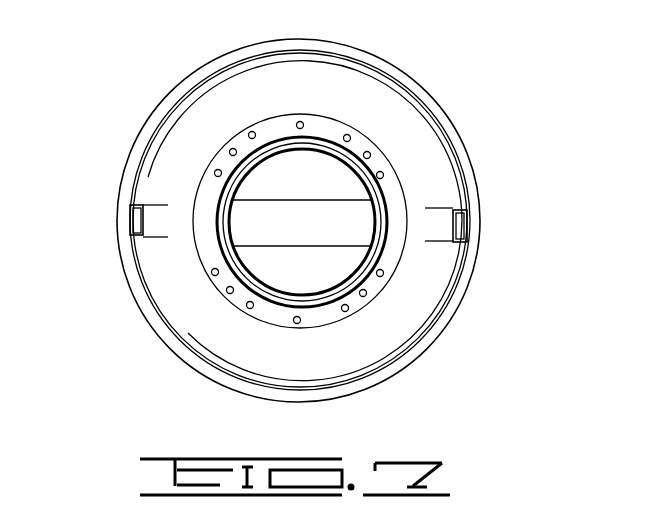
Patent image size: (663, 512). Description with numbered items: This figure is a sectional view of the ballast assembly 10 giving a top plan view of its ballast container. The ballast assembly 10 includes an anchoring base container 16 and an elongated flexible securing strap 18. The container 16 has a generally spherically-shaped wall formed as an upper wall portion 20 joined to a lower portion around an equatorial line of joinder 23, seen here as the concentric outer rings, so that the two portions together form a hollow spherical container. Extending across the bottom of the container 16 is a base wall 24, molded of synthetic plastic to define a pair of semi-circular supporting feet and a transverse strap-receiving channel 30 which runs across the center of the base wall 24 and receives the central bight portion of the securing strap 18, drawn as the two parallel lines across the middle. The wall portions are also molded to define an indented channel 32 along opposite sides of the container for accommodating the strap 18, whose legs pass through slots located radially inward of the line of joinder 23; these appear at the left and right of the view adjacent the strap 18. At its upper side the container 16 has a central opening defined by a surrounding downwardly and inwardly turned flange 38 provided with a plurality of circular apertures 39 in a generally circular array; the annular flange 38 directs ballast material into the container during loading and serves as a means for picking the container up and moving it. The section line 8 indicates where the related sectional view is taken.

The ballast assembly 10 is at (132, 88).
The section line 8- 8 is at (300, 24).
The anchoring base container 16 is at (422, 134).
The securing strap 18 is at (130, 222).
The upper wall portion 20 is at (280, 357).
The equatorial line of joinder 23 is at (236, 58).
The base wall 24 is at (317, 275).
The strap-receiving channel 30 is at (287, 226).
The indented channel 32 is at (143, 238).
The flange 38 is at (388, 255).
The circular apertures 39 is at (249, 131).